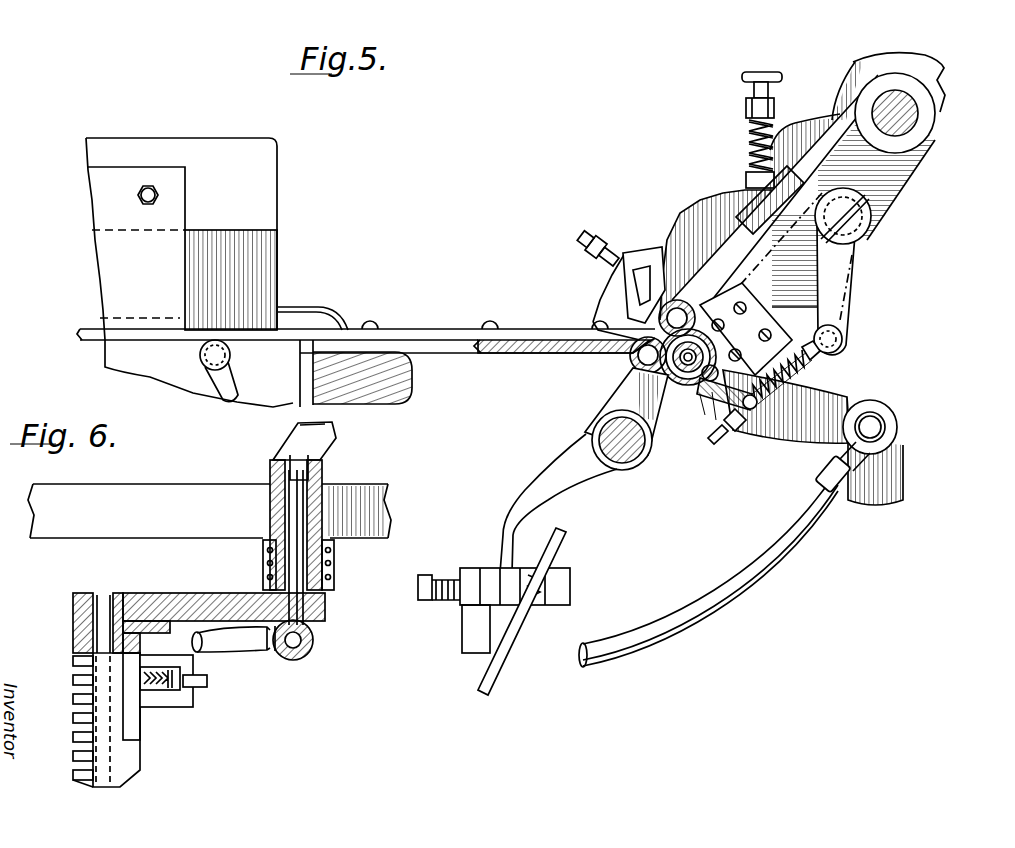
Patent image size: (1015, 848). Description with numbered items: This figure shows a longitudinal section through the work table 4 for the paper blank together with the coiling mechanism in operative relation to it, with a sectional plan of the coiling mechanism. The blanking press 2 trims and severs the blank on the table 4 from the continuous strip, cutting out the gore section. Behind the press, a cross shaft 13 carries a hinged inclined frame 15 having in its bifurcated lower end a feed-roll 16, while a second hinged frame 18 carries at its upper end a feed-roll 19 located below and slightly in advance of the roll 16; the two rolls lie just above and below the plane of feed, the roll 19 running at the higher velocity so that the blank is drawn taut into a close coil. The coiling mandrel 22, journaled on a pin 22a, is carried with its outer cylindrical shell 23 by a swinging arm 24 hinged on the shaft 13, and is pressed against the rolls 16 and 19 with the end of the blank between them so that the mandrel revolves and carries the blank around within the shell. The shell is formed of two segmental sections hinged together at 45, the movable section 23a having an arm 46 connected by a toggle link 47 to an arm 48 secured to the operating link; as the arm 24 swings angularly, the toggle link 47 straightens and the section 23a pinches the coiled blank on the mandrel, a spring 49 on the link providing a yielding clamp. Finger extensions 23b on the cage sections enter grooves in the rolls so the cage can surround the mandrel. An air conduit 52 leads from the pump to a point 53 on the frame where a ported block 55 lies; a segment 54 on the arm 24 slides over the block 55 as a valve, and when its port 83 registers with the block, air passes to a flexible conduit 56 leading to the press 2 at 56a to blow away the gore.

In FIG. 5, the blanking press 2 is at (280, 162).
In FIG. 5, the work table or guide 4 is at (440, 353).
In FIG. 5, the cross shaft 13 is at (938, 110).
In FIG. 5, the hinged inclined frame 15 is at (823, 140).
In FIG. 5, the feed-roll 16 is at (682, 265).
In FIG. 5, the hinged frame 18 is at (610, 402).
In FIG. 5, the feed-roll 19 is at (577, 338).
In FIG. 5, the coiling mandrel 22 is at (680, 392).
In FIG. 5, the pin 22a is at (710, 400).
In FIG. 6, the pin 22a is at (73, 643).
In FIG. 5, the outer cylindrical shell 23 is at (817, 290).
In FIG. 6, the outer cylindrical shell 23 is at (100, 672).
In FIG. 5, the movable cage section 23a is at (657, 430).
In FIG. 6, the finger extensions 23b is at (80, 732).
In FIG. 5, the swinging arm 24 is at (835, 292).
In FIG. 5, the hinge 45 is at (723, 430).
In FIG. 5, the arm 46 is at (708, 432).
In FIG. 5, the toggle link 47 is at (843, 345).
In FIG. 5, the arm 48 is at (857, 272).
In FIG. 5, the spring 49 is at (807, 375).
In FIG. 6, the air conduit 52 is at (328, 437).
In FIG. 5, the point on the frame 53 is at (893, 412).
In FIG. 6, the point on the frame 53 is at (332, 576).
In FIG. 5, the segment (valve slide) 54 is at (848, 397).
In FIG. 6, the segment (valve slide) 54 is at (203, 595).
In FIG. 6, the ported block 55 is at (330, 553).
In FIG. 5, the flexible conduit 56 is at (748, 598).
In FIG. 6, the flexible conduit 56 is at (237, 652).
In FIG. 5, the point of air puff 56a is at (217, 402).
In FIG. 6, the port 83 is at (305, 606).